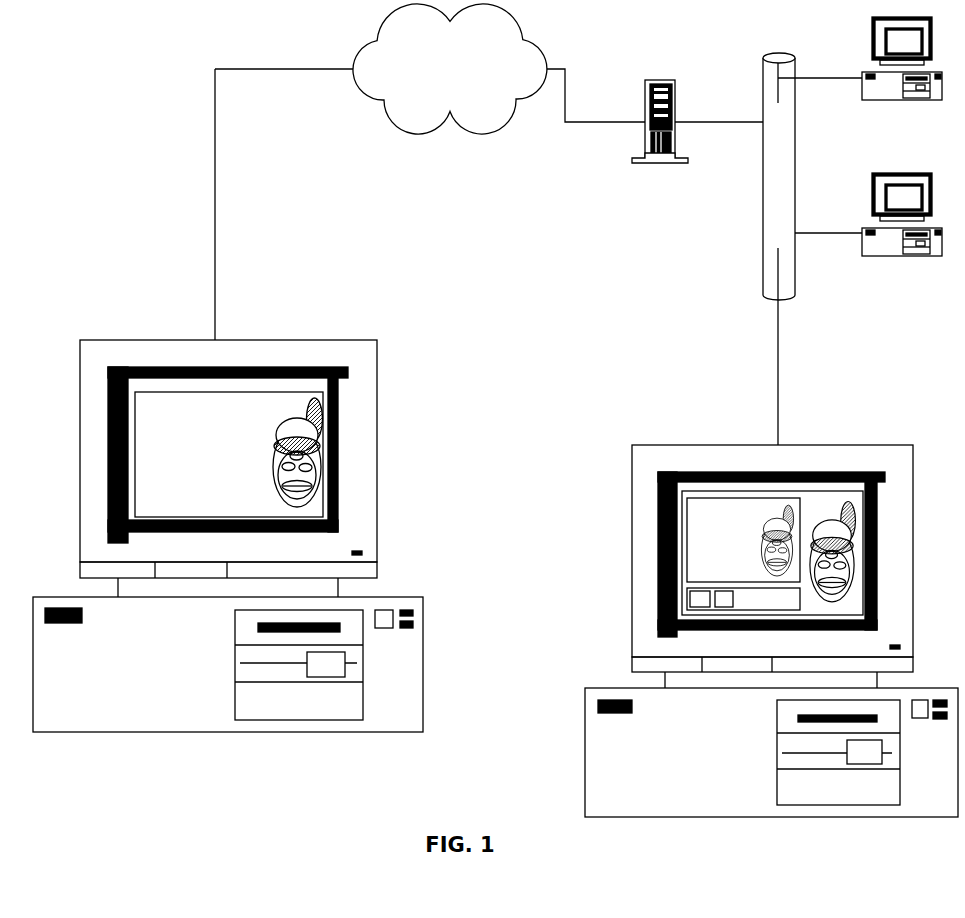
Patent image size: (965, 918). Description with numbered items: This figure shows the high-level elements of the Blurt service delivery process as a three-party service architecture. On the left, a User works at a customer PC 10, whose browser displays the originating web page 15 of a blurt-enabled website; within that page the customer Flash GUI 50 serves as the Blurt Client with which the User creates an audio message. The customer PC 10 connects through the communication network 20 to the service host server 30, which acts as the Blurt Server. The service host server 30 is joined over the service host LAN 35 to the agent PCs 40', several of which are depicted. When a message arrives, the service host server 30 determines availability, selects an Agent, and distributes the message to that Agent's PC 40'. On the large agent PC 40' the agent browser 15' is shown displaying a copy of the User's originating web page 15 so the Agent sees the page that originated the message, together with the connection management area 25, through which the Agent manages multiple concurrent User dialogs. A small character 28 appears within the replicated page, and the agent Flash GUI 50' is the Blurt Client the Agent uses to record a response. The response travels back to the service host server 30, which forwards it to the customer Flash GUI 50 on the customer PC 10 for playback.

The Customer PC 10 is at (228, 556).
The Customer browser originating web page 15 is at (473, 433).
The Agent browser 15' is at (779, 499).
The Communication network 20 is at (450, 69).
The Agent browser connection management area 25 is at (690, 587).
The Animated character replica on agent display 28 is at (784, 502).
The Service host server 30 is at (660, 141).
The Service Host LAN 35 is at (779, 176).
The Agent PCs 40' is at (771, 437).
The Customer Flash GUI 50 is at (321, 392).
The Agent Flash GUI 50' is at (869, 482).